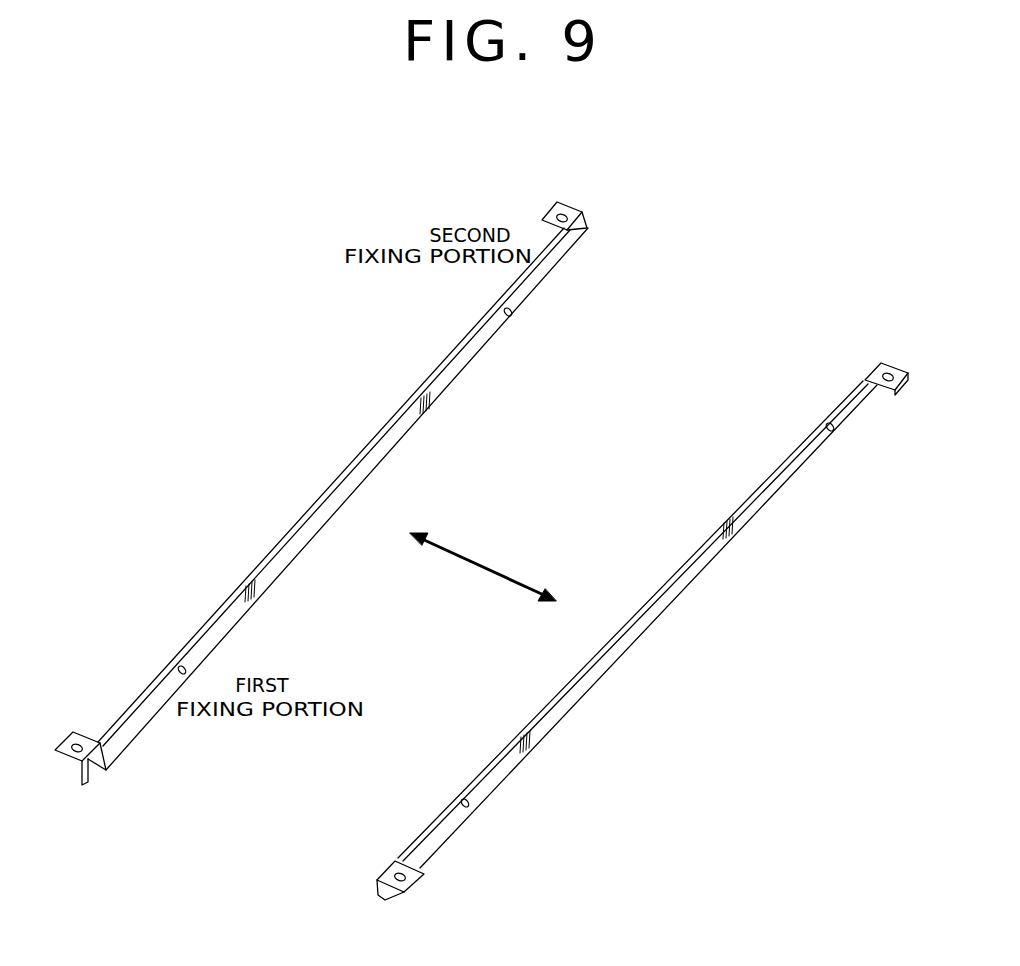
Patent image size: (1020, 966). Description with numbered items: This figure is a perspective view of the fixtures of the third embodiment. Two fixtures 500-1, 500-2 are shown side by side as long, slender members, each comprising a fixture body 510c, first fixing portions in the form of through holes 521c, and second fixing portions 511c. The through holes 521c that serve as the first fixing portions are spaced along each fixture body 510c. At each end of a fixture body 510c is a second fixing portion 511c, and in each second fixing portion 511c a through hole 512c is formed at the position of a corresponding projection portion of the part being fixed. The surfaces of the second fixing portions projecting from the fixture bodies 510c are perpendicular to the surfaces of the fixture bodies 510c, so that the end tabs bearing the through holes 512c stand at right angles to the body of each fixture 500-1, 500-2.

The fixture 500-1 is at (609, 199).
The fixture 500-2 is at (847, 341).
The fixture body 510c is at (389, 462).
The second fixing portion 511c is at (540, 219).
The through hole 512c is at (559, 200).
The first fixing portion 521c is at (513, 315).